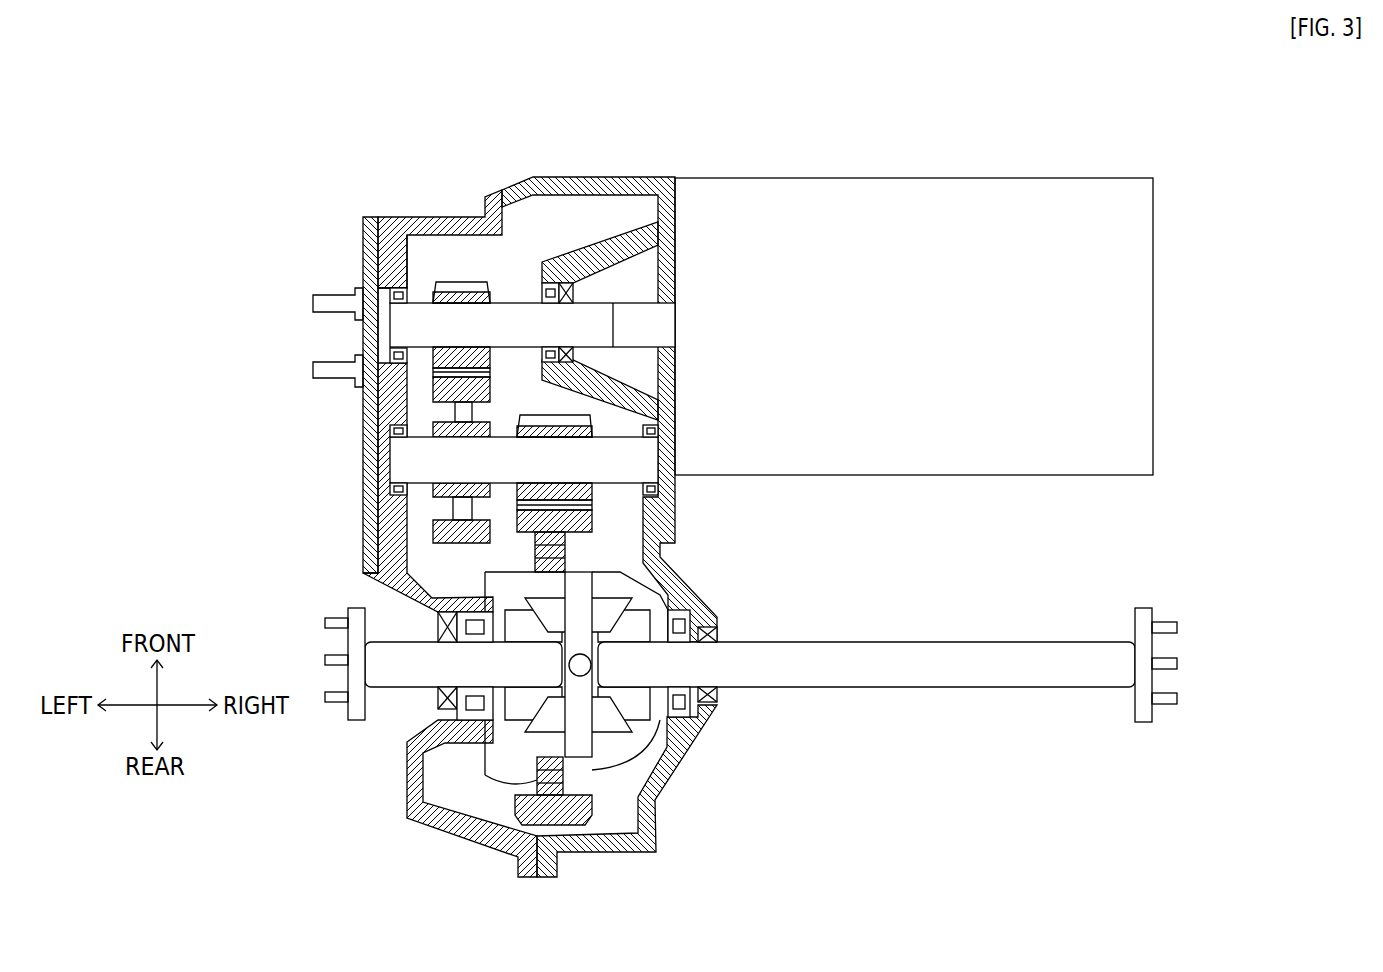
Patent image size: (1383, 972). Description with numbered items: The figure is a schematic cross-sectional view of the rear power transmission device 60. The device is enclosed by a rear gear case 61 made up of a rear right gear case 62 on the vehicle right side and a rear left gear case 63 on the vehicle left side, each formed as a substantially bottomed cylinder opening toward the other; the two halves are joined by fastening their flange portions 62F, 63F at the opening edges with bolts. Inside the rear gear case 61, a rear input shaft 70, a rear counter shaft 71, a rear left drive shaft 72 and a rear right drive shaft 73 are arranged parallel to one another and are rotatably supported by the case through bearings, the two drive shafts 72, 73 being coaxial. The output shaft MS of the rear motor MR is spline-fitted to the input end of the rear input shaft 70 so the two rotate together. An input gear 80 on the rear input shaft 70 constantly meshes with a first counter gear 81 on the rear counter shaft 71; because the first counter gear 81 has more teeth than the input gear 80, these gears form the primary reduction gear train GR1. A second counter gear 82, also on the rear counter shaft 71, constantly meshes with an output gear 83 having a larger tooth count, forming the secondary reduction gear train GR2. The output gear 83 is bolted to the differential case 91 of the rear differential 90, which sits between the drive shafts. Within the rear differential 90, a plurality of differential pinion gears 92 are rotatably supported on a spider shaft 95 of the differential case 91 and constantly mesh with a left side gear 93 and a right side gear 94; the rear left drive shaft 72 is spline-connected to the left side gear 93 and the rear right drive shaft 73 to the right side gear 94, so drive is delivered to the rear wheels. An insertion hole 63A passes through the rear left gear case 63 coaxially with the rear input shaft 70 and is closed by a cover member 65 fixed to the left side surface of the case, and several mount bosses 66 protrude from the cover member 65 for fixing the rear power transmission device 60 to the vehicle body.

The rear power transmission device 60 is at (497, 502).
The rear gear case 61 is at (497, 502).
The rear right gear case 62 is at (575, 180).
The flange portion 62F is at (560, 857).
The rear left gear case 63 is at (443, 217).
The insertion hole 63A is at (380, 287).
The flange portion 63F is at (517, 860).
The cover member 65 is at (363, 463).
The mount boss 66 is at (323, 298).
The rear input shaft 70 is at (526, 327).
The rear counter shaft 71 is at (625, 453).
The rear left drive shaft 72 is at (427, 670).
The rear right drive shaft 73 is at (825, 670).
The input gear 80 is at (448, 293).
The first counter gear 81 is at (457, 532).
The second counter gear 82 is at (543, 430).
The output gear 83 is at (565, 535).
The rear differential 90 is at (616, 671).
The differential case 91 is at (630, 578).
The differential pinion gear 92 is at (518, 605).
The left side gear 93 is at (515, 703).
The right side gear 94 is at (687, 750).
The spider shaft 95 is at (578, 737).
The primary reduction gear train GR1 is at (497, 370).
The secondary reduction gear train GR2 is at (598, 504).
The output shaft MS is at (642, 320).
The rear motor MR is at (930, 336).